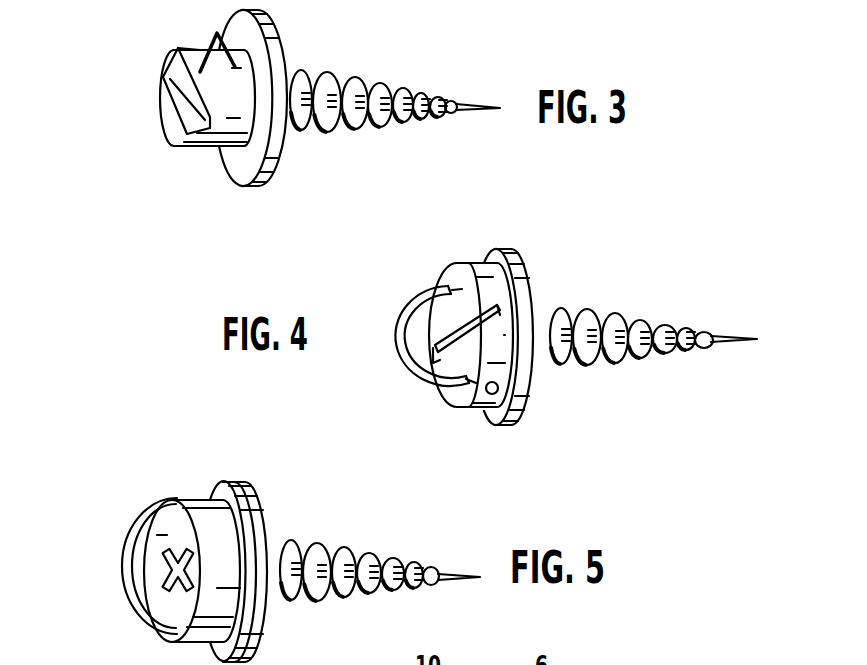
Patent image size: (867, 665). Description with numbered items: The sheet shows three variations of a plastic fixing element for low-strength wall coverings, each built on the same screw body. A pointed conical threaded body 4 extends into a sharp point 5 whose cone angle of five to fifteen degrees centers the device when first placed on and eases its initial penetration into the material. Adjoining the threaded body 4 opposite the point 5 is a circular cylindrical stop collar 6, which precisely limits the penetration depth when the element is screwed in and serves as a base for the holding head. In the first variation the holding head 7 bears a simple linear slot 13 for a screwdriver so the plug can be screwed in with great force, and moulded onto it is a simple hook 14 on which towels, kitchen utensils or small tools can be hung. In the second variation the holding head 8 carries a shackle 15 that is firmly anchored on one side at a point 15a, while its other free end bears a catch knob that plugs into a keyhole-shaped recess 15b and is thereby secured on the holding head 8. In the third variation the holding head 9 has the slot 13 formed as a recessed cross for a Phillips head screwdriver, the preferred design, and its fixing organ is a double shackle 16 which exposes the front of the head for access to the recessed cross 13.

In FIG. 3, the threaded body 4 is at (357, 80).
In FIG. 4, the threaded body 4 is at (590, 322).
In FIG. 5, the threaded body 4 is at (331, 562).
In FIG. 3, the point 5 is at (476, 106).
In FIG. 4, the point 5 is at (733, 345).
In FIG. 5, the point 5 is at (452, 572).
In FIG. 3, the stop collar 6 is at (273, 41).
In FIG. 4, the stop collar 6 is at (513, 255).
In FIG. 5, the stop collar 6 is at (253, 500).
In FIG. 3, the holding head 7 is at (203, 150).
In FIG. 4, the holding head 8 is at (475, 259).
In FIG. 5, the holding head 9 is at (200, 495).
In FIG. 3, the slot 13 is at (162, 82).
In FIG. 4, the slot 13 is at (430, 350).
In FIG. 5, the slot 13 is at (162, 578).
In FIG. 3, the hook 14 is at (217, 32).
In FIG. 4, the shackle 15 is at (396, 336).
In FIG. 4, the anchoring point 15a is at (445, 290).
In FIG. 4, the recess 15b is at (483, 410).
In FIG. 5, the double shackle 16 is at (132, 553).